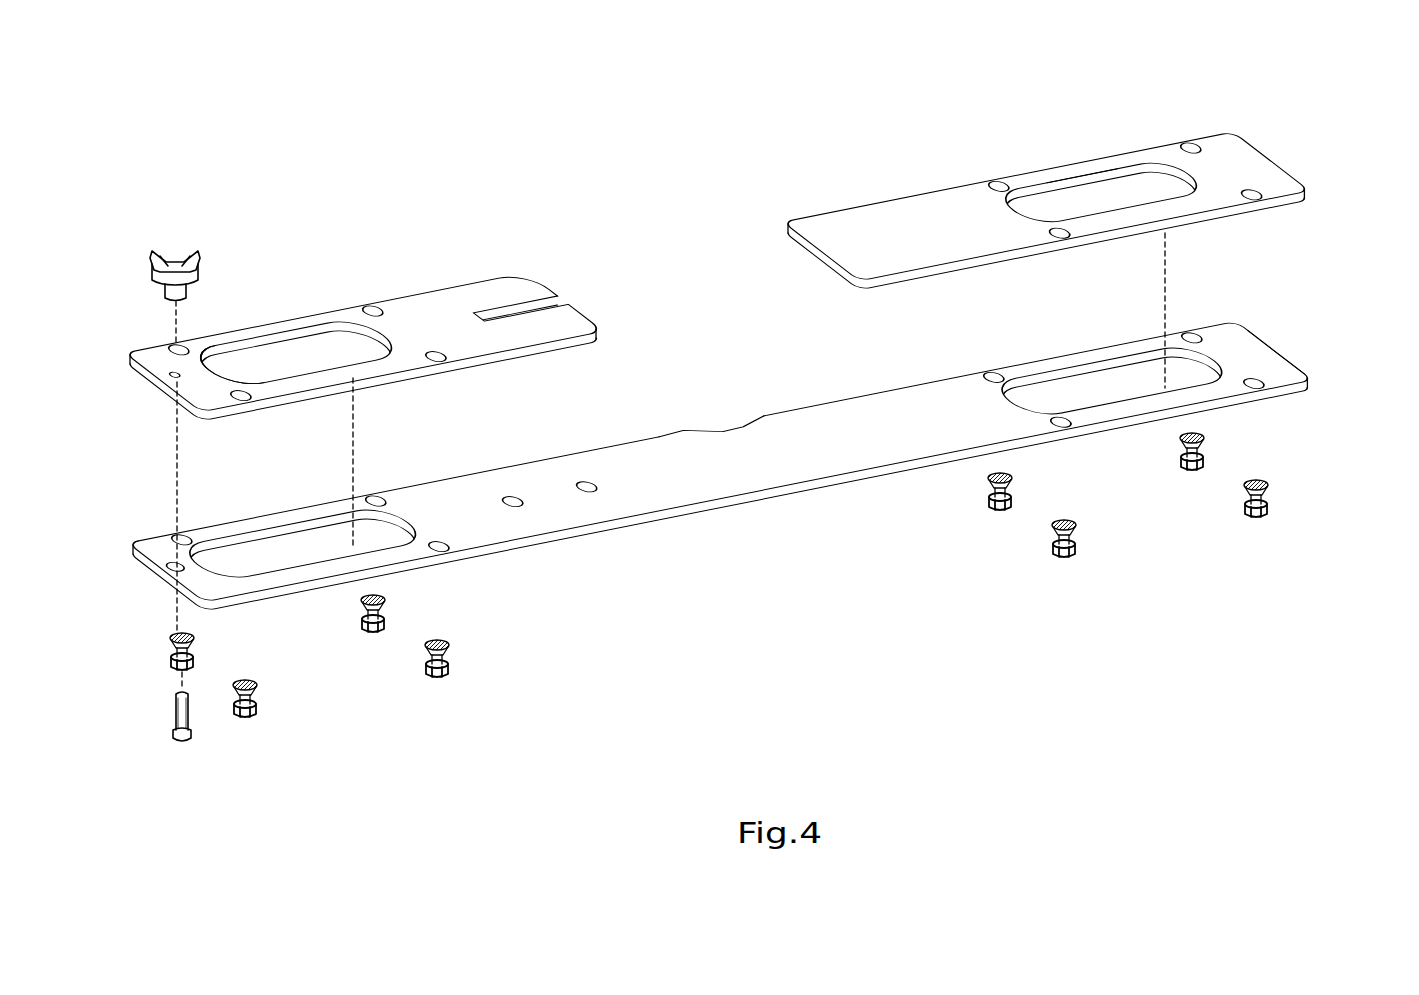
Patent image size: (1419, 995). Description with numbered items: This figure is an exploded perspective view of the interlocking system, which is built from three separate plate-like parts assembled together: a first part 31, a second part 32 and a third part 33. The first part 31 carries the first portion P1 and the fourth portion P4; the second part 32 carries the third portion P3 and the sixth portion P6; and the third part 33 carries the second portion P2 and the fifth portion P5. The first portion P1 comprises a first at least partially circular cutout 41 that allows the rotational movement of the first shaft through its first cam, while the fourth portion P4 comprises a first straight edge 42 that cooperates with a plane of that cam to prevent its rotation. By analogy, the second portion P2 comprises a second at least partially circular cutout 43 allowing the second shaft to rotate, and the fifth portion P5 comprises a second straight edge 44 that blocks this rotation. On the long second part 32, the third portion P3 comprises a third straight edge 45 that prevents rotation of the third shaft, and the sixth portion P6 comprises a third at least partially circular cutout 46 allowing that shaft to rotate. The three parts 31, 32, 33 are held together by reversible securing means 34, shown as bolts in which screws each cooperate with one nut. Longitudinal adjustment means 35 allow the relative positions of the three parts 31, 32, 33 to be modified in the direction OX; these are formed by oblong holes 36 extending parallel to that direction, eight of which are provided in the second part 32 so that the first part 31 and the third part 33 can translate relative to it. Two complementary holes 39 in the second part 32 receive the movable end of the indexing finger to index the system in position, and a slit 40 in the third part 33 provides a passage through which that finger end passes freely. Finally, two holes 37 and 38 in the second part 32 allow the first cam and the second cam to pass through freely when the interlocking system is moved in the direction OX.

The first part 31 is at (1247, 157).
The second part 32 is at (903, 474).
The third part 33 is at (447, 277).
The reversible securing means 34 is at (1258, 512).
The longitudinal adjustment means 35 is at (1258, 370).
The oblong holes 36 is at (1295, 368).
The hole 37 is at (1102, 390).
The hole 38 is at (283, 552).
The complementary holes 39 is at (513, 508).
The slit 40 is at (516, 290).
The first at least partially circular cutout 41 is at (1165, 192).
The first straight edge 42 is at (1077, 187).
The second at least partially circular cutout 43 is at (377, 345).
The second straight edge 44 is at (242, 348).
The third straight edge 45 is at (632, 440).
The third at least partially circular cutout 46 is at (753, 423).
The first portion P1 is at (1152, 163).
The second portion P2 is at (338, 322).
The third portion P3 is at (660, 436).
The fourth portion P4 is at (1040, 178).
The fifth portion P5 is at (234, 326).
The sixth portion P6 is at (732, 424).